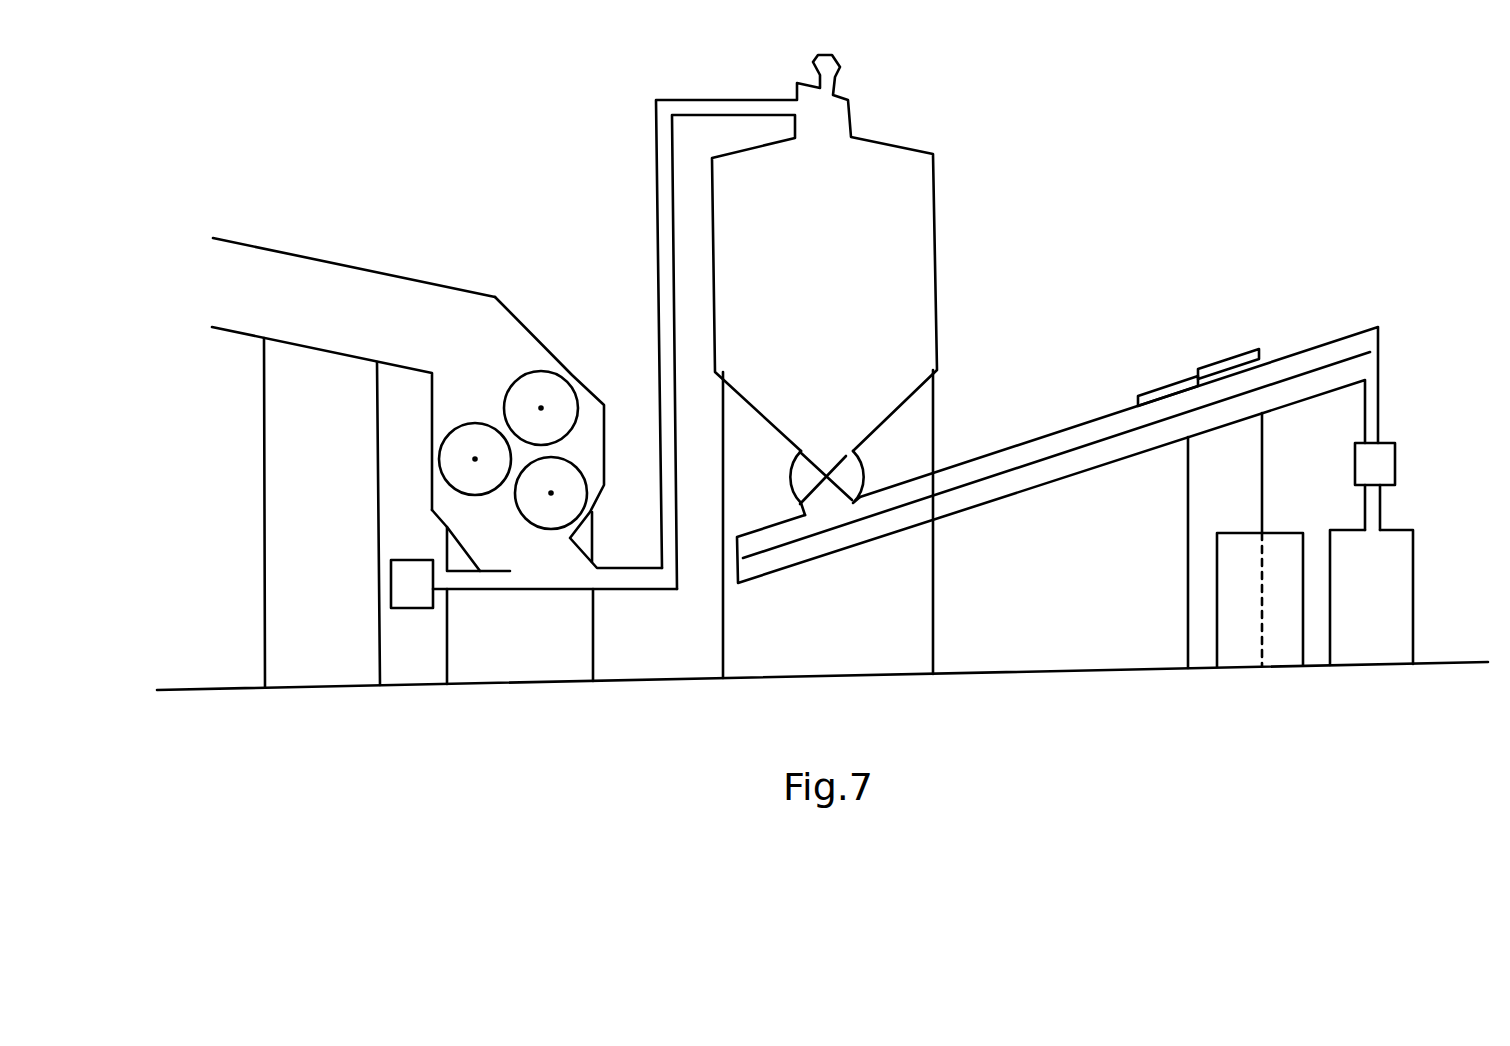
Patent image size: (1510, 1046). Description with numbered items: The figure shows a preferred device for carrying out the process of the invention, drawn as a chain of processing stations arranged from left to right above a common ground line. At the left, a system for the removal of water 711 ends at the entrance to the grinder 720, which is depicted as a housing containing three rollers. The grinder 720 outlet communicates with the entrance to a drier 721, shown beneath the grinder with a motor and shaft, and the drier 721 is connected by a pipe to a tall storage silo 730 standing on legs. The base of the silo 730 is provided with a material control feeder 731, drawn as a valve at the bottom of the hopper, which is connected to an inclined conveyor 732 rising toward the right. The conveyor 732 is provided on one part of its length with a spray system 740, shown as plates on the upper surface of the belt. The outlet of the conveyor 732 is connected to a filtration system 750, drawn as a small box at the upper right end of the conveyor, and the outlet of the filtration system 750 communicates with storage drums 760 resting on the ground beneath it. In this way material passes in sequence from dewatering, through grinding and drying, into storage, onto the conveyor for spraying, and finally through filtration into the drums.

The system for the removal of water 711 is at (235, 322).
The grinder 720 is at (572, 376).
The drier 721 is at (545, 575).
The storage silo 730 is at (897, 147).
The material control feeder 731 is at (866, 492).
The conveyor 732 is at (1050, 483).
The spray system 740 is at (1181, 380).
The filtration system 750 is at (1396, 457).
The storage drums 760 is at (1415, 587).